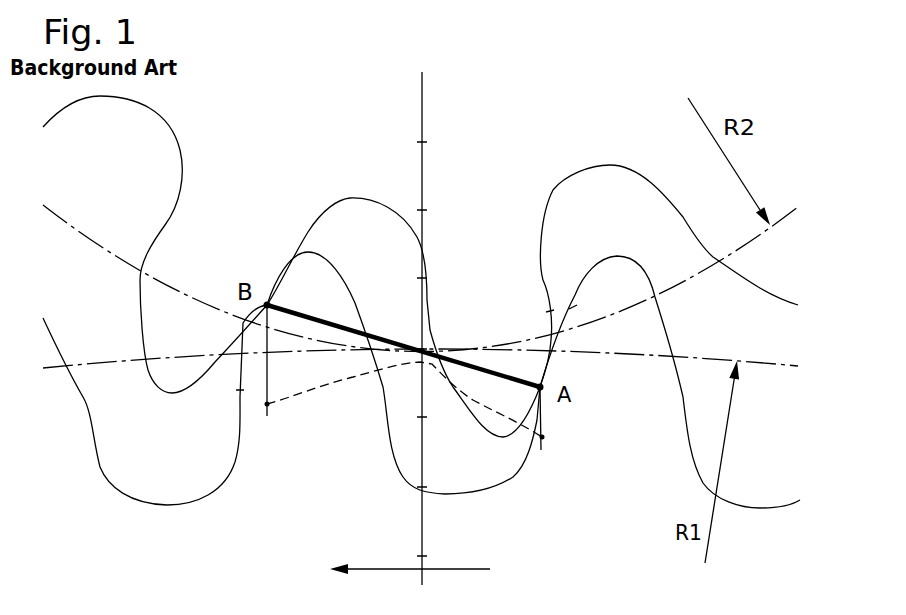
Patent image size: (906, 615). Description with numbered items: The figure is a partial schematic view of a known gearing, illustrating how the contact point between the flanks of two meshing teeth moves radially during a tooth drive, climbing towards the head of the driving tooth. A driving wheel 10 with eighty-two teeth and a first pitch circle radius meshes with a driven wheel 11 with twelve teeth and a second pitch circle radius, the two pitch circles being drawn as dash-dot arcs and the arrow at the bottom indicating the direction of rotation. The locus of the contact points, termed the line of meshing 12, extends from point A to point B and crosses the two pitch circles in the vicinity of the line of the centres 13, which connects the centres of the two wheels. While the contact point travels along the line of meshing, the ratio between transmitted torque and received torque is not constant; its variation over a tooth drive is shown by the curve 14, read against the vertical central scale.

The driving wheel 10 is at (420, 339).
The driven wheel 11 is at (558, 126).
The line of meshing 12 is at (378, 337).
The line of the centres 13 is at (422, 517).
The curve 14 is at (325, 386).